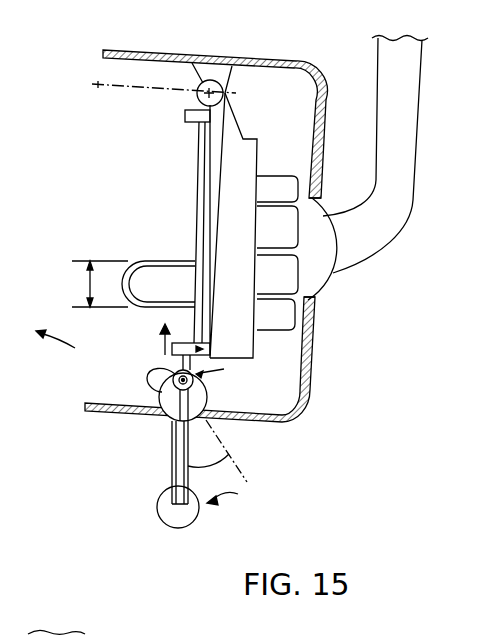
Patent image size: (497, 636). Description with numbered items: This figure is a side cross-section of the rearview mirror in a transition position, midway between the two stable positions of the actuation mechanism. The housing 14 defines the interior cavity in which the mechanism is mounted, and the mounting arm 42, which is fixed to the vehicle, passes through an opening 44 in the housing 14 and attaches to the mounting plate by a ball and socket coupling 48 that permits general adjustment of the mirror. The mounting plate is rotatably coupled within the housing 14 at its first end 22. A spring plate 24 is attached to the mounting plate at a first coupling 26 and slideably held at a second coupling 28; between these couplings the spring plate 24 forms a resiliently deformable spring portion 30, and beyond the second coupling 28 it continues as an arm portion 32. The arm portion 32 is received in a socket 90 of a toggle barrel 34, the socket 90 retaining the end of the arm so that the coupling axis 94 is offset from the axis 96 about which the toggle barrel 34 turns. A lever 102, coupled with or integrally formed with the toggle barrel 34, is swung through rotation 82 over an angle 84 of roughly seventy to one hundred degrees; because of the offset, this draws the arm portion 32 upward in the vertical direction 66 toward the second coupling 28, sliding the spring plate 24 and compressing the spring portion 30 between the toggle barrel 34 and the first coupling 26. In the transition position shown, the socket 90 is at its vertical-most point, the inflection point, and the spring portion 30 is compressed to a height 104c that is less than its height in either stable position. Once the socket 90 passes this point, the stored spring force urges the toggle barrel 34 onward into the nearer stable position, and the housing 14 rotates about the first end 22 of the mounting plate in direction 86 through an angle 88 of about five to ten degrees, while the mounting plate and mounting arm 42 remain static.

The housing 14 is at (120, 50).
The first end 22 is at (203, 80).
The spring plate 24 is at (194, 199).
The first coupling 26 is at (187, 131).
The second coupling 28 is at (172, 349).
The spring portion 30 is at (126, 251).
The arm portion 32 is at (224, 369).
The toggle barrel 34 is at (176, 399).
The mounting arm 42 is at (398, 116).
The opening 44 is at (322, 150).
The ball and socket coupling 48 is at (307, 209).
The vertical direction 66 is at (160, 346).
The rotation 82 is at (238, 494).
The angle 84 is at (228, 461).
The direction 86 is at (54, 347).
The angle 88 is at (92, 85).
The socket 90 is at (204, 375).
The coupling axis 94 is at (152, 374).
The axis 96 is at (181, 414).
The lever 102 is at (163, 508).
The height 104c is at (90, 282).